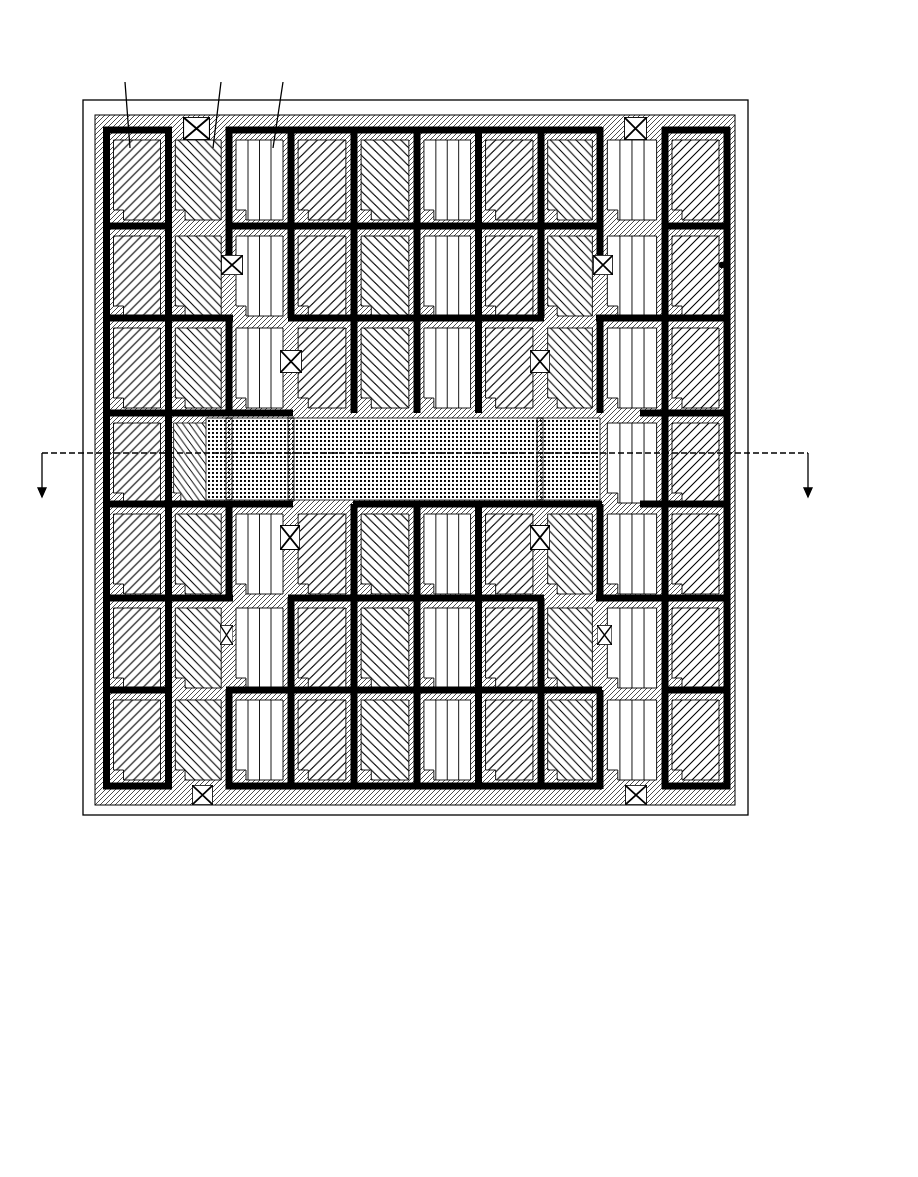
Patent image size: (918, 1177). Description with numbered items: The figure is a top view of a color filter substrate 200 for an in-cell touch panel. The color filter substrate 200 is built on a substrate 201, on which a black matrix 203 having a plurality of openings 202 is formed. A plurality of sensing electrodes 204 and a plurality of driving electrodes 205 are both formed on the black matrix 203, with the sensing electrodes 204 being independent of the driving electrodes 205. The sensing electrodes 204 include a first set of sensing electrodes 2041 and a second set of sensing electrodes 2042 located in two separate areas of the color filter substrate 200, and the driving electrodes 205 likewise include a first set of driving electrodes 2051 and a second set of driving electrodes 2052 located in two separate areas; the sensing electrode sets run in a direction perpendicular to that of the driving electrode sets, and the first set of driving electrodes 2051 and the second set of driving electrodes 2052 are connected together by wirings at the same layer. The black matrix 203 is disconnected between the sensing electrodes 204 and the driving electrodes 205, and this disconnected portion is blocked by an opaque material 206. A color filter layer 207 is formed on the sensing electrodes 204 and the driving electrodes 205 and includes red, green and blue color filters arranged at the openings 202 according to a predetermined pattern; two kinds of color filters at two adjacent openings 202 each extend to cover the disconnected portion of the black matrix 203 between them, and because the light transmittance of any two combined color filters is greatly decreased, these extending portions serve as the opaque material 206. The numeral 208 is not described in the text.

The color filter substrate 200 is at (77, 31).
The substrate 201 is at (748, 104).
The openings 202 is at (725, 265).
The black matrix 203 is at (735, 186).
The sensing electrodes 204 is at (439, 458).
The first set of sensing electrodes 2041 is at (738, 413).
The second set of sensing electrodes 2042 is at (822, 676).
The driving electrodes 205 is at (489, 459).
The first set of driving electrodes 2051 is at (553, 792).
The second set of driving electrodes 2052 is at (445, 148).
The opaque material 206 is at (633, 122).
The color filter layer 207 is at (300, 52).
The common electrode region 208 is at (115, 440).